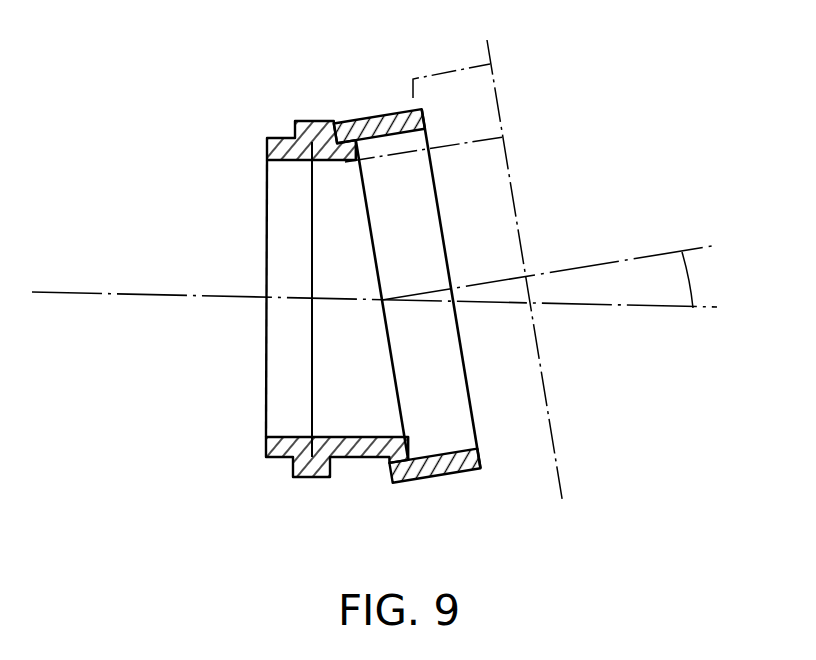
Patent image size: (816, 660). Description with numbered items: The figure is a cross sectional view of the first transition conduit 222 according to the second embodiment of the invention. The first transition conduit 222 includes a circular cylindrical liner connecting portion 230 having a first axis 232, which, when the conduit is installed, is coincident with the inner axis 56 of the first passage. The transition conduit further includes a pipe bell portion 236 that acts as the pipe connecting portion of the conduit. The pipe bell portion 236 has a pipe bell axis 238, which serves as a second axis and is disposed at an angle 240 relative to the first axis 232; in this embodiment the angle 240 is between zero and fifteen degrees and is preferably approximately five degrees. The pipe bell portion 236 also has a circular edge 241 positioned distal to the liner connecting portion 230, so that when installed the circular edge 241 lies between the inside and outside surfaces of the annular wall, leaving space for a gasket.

The inner axis 56 is at (78, 293).
The first transition conduit 222 is at (258, 95).
The liner connecting portion 230 is at (353, 462).
The first axis 232 is at (173, 296).
The pipe bell portion 236 is at (442, 483).
The pipe bell axis 238 is at (507, 278).
The angle 240 is at (697, 275).
The circular edge 241 is at (422, 118).